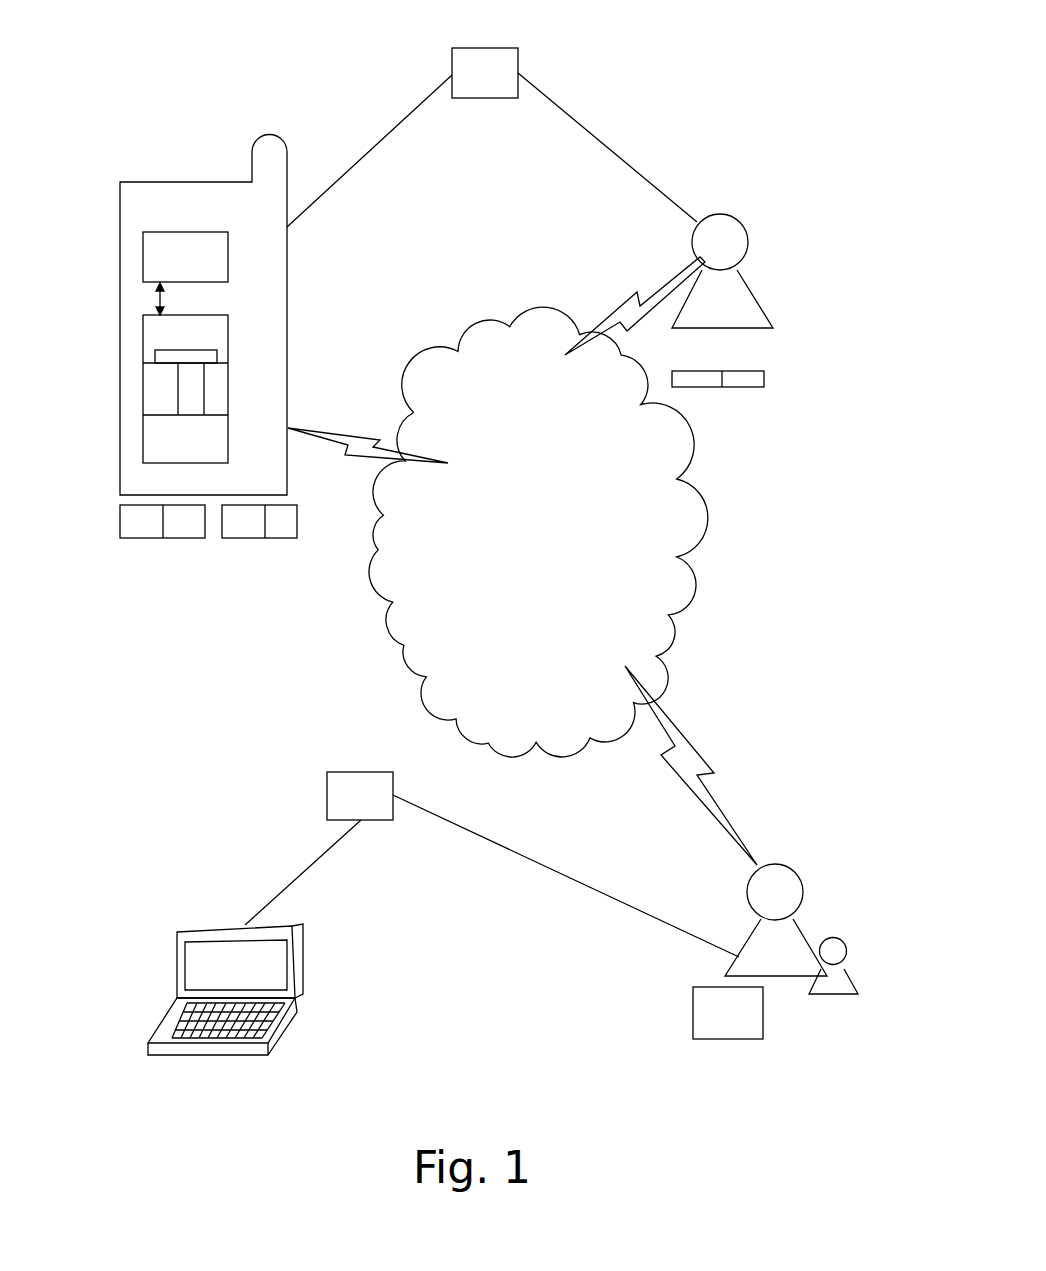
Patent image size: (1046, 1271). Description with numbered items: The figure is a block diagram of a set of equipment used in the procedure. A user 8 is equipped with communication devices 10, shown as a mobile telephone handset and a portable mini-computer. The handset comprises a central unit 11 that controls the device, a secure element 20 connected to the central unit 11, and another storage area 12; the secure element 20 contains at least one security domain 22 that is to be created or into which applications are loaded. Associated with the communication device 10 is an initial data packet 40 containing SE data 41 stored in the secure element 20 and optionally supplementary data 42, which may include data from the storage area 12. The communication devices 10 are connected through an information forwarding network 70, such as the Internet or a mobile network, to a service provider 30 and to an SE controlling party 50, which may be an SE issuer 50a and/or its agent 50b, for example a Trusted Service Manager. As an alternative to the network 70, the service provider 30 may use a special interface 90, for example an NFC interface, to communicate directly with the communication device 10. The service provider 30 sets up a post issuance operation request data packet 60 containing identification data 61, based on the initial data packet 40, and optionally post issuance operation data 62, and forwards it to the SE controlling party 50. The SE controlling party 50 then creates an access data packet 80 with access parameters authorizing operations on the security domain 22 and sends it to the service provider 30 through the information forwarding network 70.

The user 8 is at (143, 182).
The communication device 10 is at (183, 202).
The central unit 11 is at (150, 232).
The storage area 12 is at (230, 356).
The secure element 20 is at (145, 445).
The security domain 22 is at (223, 388).
The service provider 30 is at (713, 230).
The initial data packet 40 is at (120, 518).
The SE data 41 is at (147, 527).
The supplementary data 42 is at (180, 527).
The SE controlling party 50 is at (770, 977).
The SE issuer 50a is at (784, 884).
The agent of the SE issuer 50b is at (834, 950).
The post issuance operation request data packet 60 is at (297, 522).
The identification data 61 is at (697, 382).
The post issuance operation data 62 is at (747, 380).
The information forwarding network 70 is at (497, 363).
The access data packet 80 is at (725, 1023).
The interface 90 is at (487, 80).